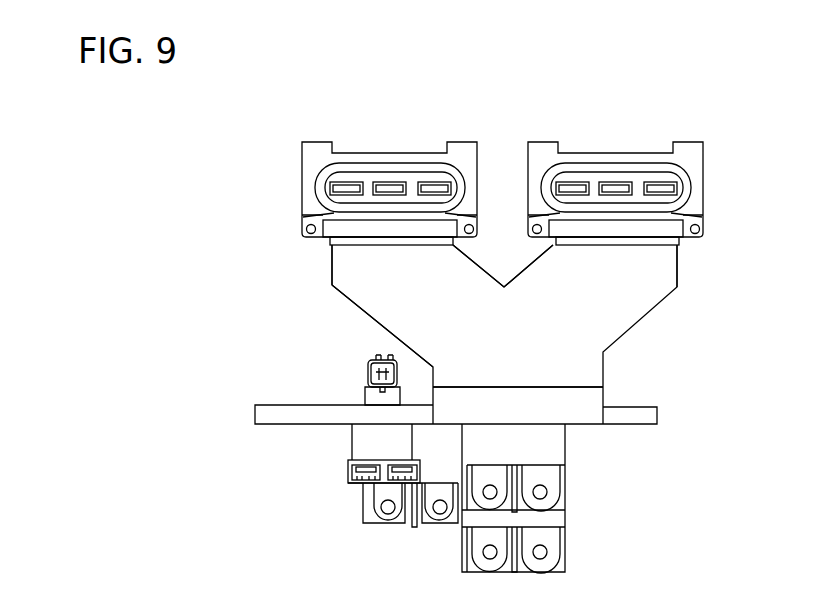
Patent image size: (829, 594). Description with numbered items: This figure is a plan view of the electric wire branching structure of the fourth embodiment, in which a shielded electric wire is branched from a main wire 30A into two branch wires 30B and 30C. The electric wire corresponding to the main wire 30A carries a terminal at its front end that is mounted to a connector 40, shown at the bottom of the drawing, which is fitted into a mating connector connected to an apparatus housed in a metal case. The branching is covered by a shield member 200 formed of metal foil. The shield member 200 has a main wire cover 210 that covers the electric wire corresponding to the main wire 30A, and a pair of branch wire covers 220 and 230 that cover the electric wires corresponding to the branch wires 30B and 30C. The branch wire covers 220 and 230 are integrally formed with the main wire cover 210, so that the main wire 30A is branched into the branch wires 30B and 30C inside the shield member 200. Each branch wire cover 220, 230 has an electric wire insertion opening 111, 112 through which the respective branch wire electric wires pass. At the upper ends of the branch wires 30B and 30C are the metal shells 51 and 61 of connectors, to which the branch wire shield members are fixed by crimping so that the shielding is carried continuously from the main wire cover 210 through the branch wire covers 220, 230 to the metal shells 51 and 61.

The metal shell 51 is at (387, 163).
The metal shell 61 is at (625, 163).
The electric wire insertion opening 111 is at (360, 238).
The electric wire insertion opening 112 is at (640, 232).
The shield member 200 is at (668, 320).
The branch wire cover 220 is at (353, 270).
The branch wire cover 230 is at (663, 273).
The branch wire 30C is at (517, 258).
The branch wire 30B is at (332, 300).
The main wire cover 210 is at (583, 372).
The main wire 30A is at (423, 395).
The connector 40 is at (585, 490).